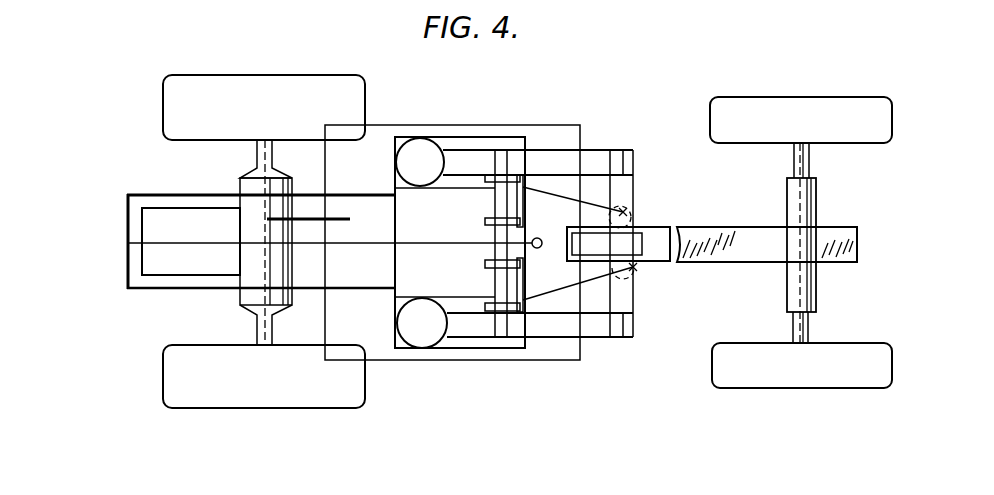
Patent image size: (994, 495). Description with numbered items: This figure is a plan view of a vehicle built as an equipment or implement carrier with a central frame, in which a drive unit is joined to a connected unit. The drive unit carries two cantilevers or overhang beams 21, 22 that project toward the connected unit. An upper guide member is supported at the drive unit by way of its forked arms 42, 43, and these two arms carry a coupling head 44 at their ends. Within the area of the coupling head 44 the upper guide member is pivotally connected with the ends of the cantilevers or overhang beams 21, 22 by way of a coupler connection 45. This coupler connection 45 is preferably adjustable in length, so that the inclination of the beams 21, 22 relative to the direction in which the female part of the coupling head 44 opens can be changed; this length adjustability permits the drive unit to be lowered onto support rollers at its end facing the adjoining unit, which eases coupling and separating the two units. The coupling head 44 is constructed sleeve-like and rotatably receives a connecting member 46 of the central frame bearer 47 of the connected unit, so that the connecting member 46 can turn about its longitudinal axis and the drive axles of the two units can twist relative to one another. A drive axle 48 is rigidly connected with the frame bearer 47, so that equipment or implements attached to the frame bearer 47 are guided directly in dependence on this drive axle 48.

The cantilever or overhang beam 21 is at (549, 166).
The cantilever or overhang beam 22 is at (549, 328).
The forked arm 42 is at (553, 209).
The forked arm 43 is at (553, 292).
The coupling head 44 is at (638, 224).
The coupler connection 45 is at (636, 204).
The connecting member 46 is at (633, 248).
The central frame bearer 47 is at (718, 237).
The drive axle 48 is at (816, 202).